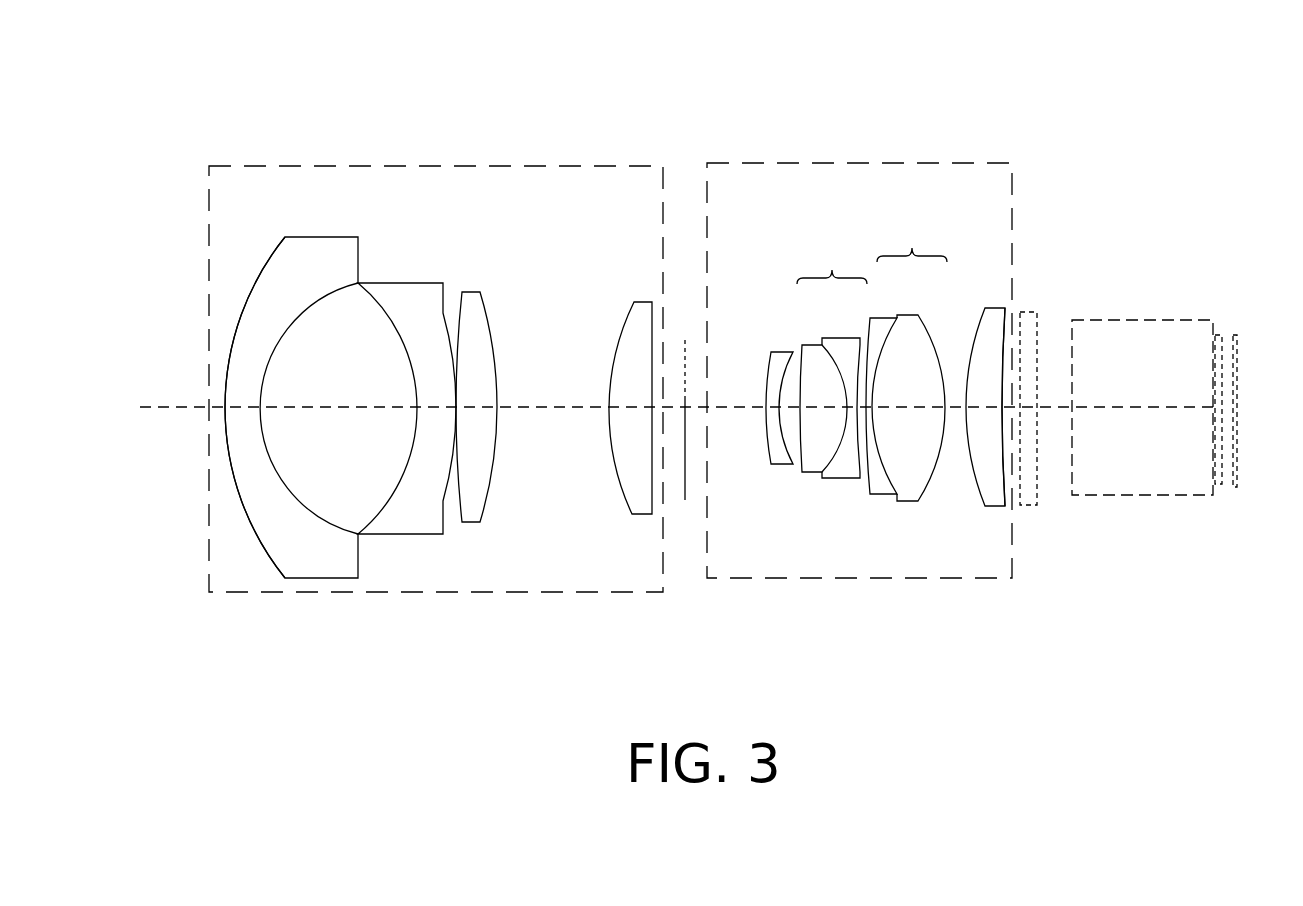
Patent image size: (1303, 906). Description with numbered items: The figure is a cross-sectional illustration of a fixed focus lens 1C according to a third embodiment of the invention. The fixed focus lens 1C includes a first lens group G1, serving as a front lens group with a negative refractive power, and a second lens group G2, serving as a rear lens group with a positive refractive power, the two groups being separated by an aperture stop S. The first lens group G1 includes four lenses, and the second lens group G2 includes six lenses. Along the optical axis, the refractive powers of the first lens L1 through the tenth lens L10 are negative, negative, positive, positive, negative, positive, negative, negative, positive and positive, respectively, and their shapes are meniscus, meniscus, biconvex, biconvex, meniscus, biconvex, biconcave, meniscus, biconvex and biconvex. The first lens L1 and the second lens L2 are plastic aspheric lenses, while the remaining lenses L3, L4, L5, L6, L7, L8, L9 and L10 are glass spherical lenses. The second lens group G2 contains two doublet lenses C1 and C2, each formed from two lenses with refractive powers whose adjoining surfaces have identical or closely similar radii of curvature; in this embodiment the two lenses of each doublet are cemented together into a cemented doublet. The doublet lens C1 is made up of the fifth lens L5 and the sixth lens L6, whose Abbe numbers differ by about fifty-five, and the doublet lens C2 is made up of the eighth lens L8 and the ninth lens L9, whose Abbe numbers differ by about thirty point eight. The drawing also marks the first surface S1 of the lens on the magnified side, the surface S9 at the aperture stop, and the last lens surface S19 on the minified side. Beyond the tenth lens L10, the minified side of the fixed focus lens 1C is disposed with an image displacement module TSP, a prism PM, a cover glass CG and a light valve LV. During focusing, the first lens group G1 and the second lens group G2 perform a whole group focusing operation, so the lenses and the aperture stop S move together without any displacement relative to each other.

The fixed focus lens 1C is at (246, 80).
The first lens group G1 is at (382, 166).
The second lens group G2 is at (798, 163).
The first lens L1 is at (288, 236).
The second lens L2 is at (400, 283).
The third lens L3 is at (470, 292).
The fourth lens L4 is at (637, 302).
The fifth lens L5 is at (776, 352).
The sixth lens L6 is at (805, 345).
The seventh lens L7 is at (829, 338).
The eighth lens L8 is at (887, 318).
The ninth lens L9 is at (915, 315).
The tenth lens L10 is at (988, 308).
The doublet lens C1 is at (832, 261).
The doublet lens C2 is at (912, 239).
The aperture stop S is at (684, 340).
The first lens surface S1 is at (247, 513).
The ninth surface (stop) S9 is at (687, 472).
The nineteenth lens surface S19 is at (1003, 506).
The image displacement module TSP is at (1030, 312).
The prism PM is at (1108, 320).
The cover glass CG is at (1218, 334).
The light valve LV is at (1236, 338).